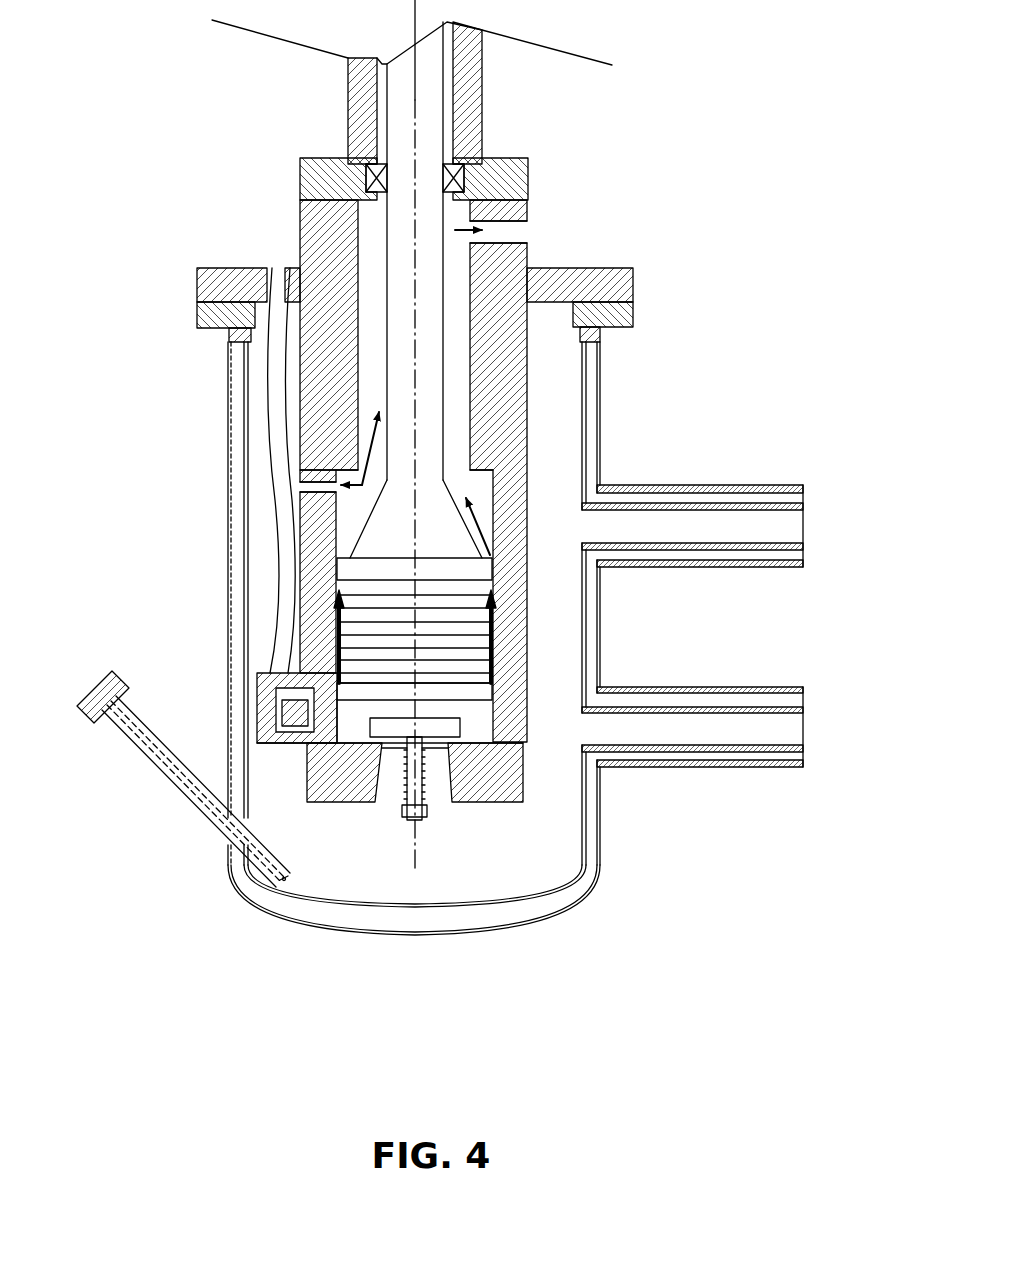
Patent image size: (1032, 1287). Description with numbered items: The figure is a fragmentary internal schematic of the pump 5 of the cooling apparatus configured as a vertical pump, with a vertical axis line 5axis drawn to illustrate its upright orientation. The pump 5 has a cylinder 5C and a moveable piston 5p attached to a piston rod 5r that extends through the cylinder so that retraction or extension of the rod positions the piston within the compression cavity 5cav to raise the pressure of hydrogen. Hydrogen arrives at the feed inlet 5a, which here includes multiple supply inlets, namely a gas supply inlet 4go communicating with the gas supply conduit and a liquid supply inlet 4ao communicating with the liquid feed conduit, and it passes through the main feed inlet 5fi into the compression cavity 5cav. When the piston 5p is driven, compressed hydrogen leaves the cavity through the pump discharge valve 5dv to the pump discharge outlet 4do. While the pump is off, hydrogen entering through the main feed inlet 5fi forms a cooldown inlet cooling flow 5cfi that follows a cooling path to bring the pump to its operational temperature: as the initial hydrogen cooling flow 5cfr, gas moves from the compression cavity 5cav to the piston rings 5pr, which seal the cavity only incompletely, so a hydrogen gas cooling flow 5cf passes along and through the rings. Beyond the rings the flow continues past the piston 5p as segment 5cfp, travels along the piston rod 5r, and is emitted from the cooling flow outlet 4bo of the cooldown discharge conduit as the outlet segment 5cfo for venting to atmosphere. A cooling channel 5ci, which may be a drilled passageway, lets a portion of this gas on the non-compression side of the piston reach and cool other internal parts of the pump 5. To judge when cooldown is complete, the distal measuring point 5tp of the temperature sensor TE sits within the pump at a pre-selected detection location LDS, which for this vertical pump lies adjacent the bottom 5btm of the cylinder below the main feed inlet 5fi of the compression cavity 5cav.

The vertical axis line 5axis is at (416, 80).
The pump discharge outlet 4do is at (277, 268).
The cooling flow outlet 4bo is at (507, 229).
The outlet segment of the cooldown operation cooling flow 5cfo is at (517, 235).
The cooling channel 5ci is at (320, 492).
The piston rod 5r is at (435, 317).
The piston rings 5pr is at (402, 618).
The cylinder 5C is at (602, 397).
The segment of the hydrogen cooling flow 5cfp is at (463, 230).
The gas supply inlet 4go is at (798, 525).
The pump 5 is at (140, 518).
The piston 5p is at (385, 565).
The hydrogen gas cooling flow 5cf is at (340, 655).
The pump discharge valve 5dv is at (268, 671).
The compression cavity 5cav is at (357, 718).
The temperature sensor TE is at (175, 775).
The initial hydrogen cooling flow 5cfr is at (344, 727).
The main feed inlet 5fi is at (391, 783).
The cooldown inlet cooling flow 5cfi is at (444, 781).
The liquid supply inlet 4ao is at (792, 737).
The feed inlet 5a is at (716, 801).
The pre-selected detection location LDS is at (300, 884).
The distal measuring point 5tp is at (282, 882).
The bottom 5btm is at (297, 895).